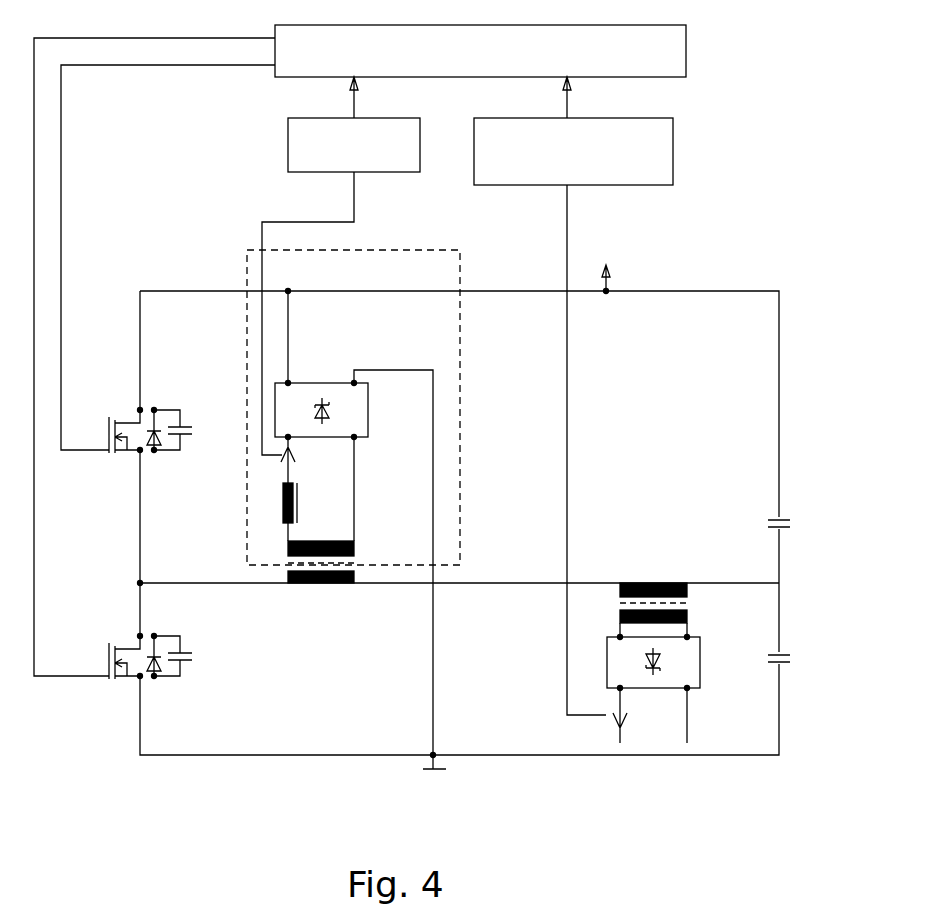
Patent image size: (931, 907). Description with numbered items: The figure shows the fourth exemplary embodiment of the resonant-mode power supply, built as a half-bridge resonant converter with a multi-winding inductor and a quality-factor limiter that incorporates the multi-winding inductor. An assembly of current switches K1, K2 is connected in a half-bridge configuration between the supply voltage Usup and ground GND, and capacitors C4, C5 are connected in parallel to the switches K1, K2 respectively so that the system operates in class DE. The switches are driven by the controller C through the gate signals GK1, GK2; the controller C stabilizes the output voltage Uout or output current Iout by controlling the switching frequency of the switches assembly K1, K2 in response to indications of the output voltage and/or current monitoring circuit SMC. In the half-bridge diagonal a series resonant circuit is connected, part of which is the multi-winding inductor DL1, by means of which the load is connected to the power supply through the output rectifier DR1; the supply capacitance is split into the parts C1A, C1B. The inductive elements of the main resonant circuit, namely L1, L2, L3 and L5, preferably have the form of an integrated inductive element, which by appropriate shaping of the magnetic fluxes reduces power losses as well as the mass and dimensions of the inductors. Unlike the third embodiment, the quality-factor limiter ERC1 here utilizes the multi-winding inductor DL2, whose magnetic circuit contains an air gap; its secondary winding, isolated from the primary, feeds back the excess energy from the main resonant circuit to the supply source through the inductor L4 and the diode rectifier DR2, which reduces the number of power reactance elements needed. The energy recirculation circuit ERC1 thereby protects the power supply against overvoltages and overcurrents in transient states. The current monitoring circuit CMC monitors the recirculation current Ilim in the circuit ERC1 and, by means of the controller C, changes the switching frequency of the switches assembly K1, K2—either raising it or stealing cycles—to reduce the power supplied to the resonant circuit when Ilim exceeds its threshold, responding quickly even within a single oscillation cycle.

The controller C is at (490, 45).
The gate control signal for switch K1 GK1 is at (182, 255).
The gate control signal for switch K2 GK2 is at (169, 355).
The current monitoring circuit CMC is at (324, 266).
The output voltage and/or current monitoring circuit SMC is at (598, 396).
The energy recirculation circuit ERC1 is at (353, 401).
The current switch K1 is at (120, 431).
The current switch K2 is at (120, 631).
The capacitor C4 is at (179, 430).
The capacitor C5 is at (179, 656).
The diode rectifier DR2 is at (354, 523).
The output rectifier diode DR1 is at (653, 689).
The inductive element of the main resonant circuit L1 is at (305, 579).
The inductive element of the main resonant circuit L2 is at (653, 581).
The inductive element of the main resonant circuit L3 is at (641, 623).
The inductor L4 is at (300, 512).
The inductive element of the main resonant circuit L5 is at (305, 496).
The multi-winding inductor DL1 is at (672, 607).
The multi-winding inductor DL2 is at (337, 556).
The supply capacitor part A C1A is at (731, 491).
The supply capacitor part B C1B is at (769, 651).
The supply voltage Usup is at (621, 273).
The ground GND is at (435, 770).
The recirculation circuit current Ilim is at (304, 460).
The output current Iout is at (608, 715).
The output voltage Uout is at (653, 721).